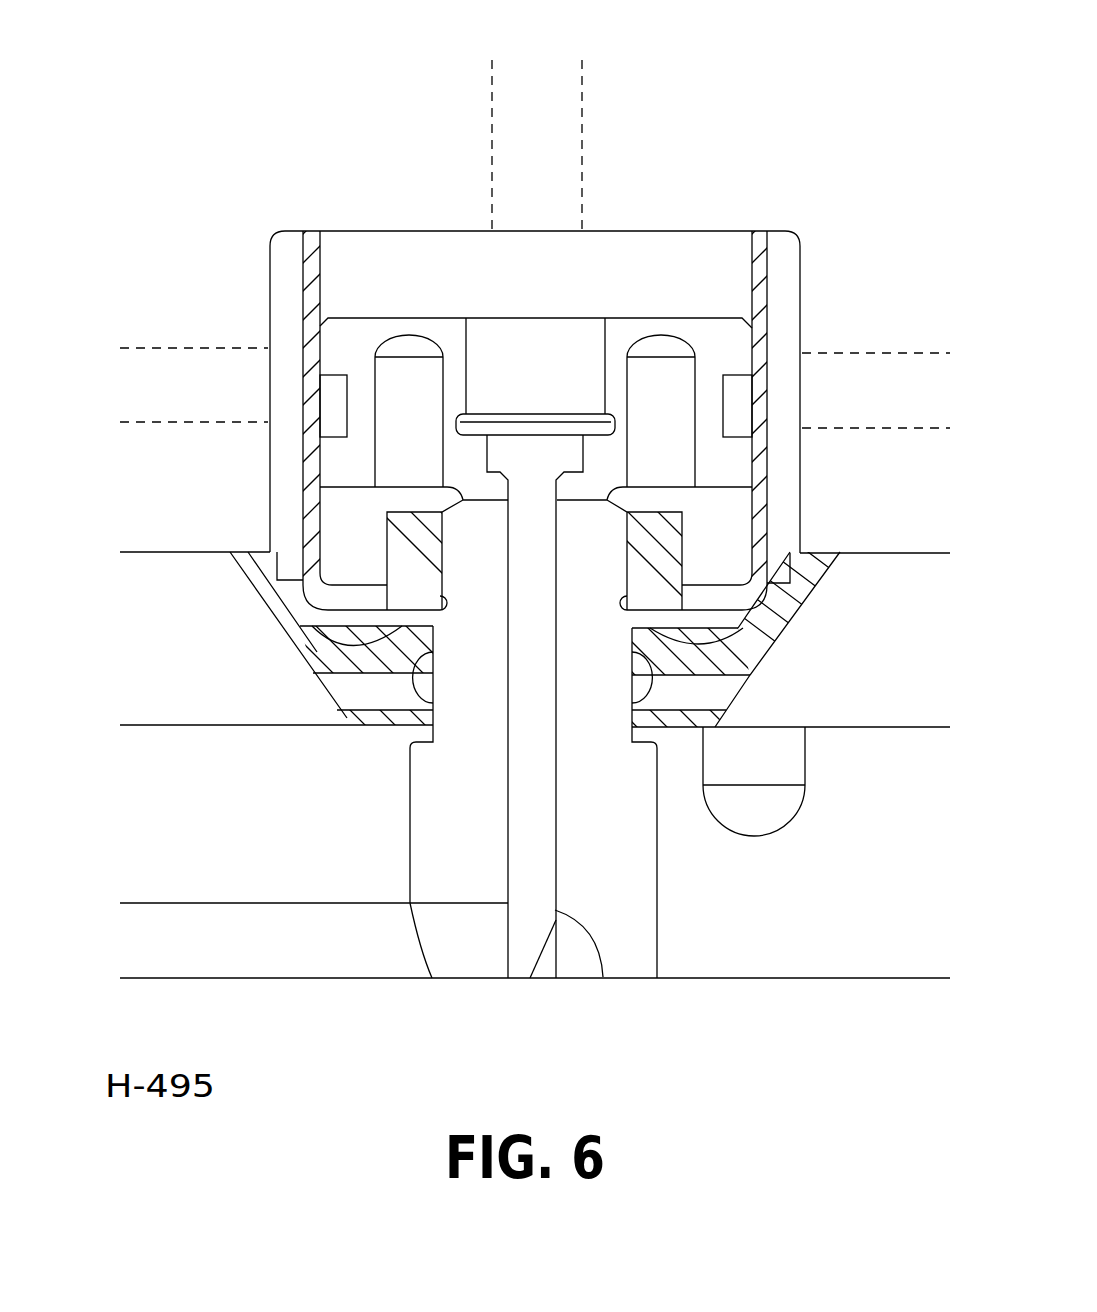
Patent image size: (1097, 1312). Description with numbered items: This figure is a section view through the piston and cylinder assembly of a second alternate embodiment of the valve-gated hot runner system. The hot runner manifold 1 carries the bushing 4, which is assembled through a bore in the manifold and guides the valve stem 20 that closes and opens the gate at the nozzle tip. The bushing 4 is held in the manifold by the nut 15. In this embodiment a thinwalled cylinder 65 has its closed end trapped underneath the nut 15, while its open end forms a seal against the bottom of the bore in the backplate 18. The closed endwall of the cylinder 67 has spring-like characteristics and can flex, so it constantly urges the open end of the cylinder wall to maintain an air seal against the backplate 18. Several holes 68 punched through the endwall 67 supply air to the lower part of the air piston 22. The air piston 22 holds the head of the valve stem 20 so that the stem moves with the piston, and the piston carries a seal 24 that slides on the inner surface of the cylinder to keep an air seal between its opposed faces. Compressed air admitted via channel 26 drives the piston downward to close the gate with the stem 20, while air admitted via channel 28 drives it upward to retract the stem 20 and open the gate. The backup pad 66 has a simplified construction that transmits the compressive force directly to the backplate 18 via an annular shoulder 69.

The hot runner manifold 1 is at (210, 817).
The bushing 4 is at (459, 822).
The nut 15 is at (677, 567).
The backplate 18 is at (117, 265).
The valve stem 20 is at (550, 865).
The air piston 22 is at (725, 347).
The seal 24 is at (733, 415).
The channel 26 is at (548, 132).
The channel 28 is at (158, 388).
The thinwalled cylinder 65 is at (303, 300).
The backup pad 66 is at (805, 568).
The closed endwall of the cylinder 67 is at (343, 618).
The holes 68 is at (350, 620).
The annular shoulder 69 is at (256, 563).